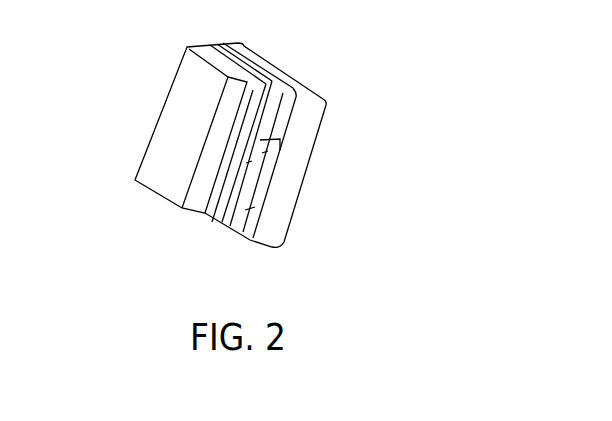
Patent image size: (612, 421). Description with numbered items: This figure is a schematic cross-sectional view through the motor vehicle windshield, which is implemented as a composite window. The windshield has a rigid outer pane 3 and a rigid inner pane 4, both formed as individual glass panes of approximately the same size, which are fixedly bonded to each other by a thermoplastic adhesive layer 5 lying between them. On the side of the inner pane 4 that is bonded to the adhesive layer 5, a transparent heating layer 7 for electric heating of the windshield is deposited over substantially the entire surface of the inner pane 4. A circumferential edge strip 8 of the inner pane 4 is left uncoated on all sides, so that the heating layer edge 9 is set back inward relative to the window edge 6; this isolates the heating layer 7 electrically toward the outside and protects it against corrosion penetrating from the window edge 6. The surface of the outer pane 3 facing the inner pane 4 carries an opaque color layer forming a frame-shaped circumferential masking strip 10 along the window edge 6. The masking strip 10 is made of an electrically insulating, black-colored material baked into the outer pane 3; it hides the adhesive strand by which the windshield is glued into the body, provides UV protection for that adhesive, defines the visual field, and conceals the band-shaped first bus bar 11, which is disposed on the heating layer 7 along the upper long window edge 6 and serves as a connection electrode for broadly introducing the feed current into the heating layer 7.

The outer pane 3 is at (198, 201).
The inner pane 4 is at (284, 198).
The thermoplastic adhesive layer 5 is at (221, 223).
The window edge 6 is at (263, 63).
The heating layer 7 is at (250, 212).
The edge strip 8 is at (280, 125).
The heating layer edge 9 is at (262, 153).
The masking strip 10 is at (252, 92).
The first bus bar 11 is at (246, 163).